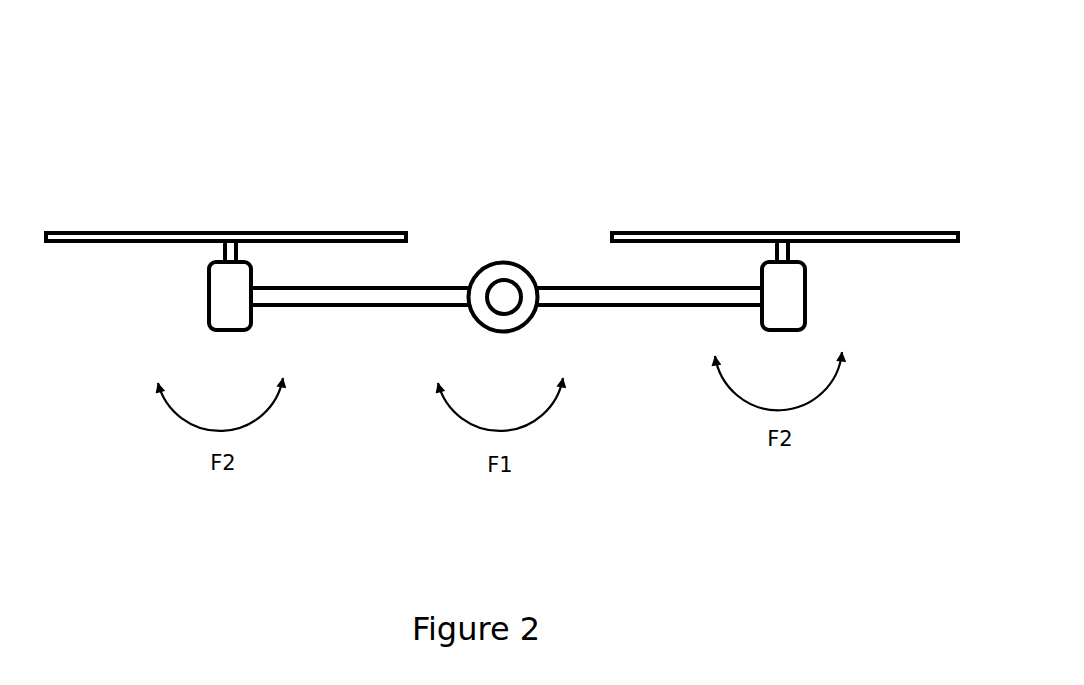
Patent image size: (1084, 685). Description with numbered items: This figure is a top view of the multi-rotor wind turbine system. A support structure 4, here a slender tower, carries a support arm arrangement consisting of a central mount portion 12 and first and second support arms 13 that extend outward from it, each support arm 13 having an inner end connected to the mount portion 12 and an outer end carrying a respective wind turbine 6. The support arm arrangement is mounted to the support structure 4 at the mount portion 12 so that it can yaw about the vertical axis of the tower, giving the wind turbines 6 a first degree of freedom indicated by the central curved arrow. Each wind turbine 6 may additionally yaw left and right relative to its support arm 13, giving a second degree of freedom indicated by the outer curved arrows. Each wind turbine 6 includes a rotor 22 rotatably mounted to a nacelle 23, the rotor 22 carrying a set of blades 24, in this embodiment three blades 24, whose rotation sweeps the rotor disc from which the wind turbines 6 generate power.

The support structure 4 is at (513, 281).
The wind turbine 6 is at (201, 117).
The mount portion 12 is at (503, 262).
The support arm 13 is at (348, 308).
The rotor 22 is at (217, 252).
The nacelle 23 is at (254, 322).
The blades 24 is at (246, 201).